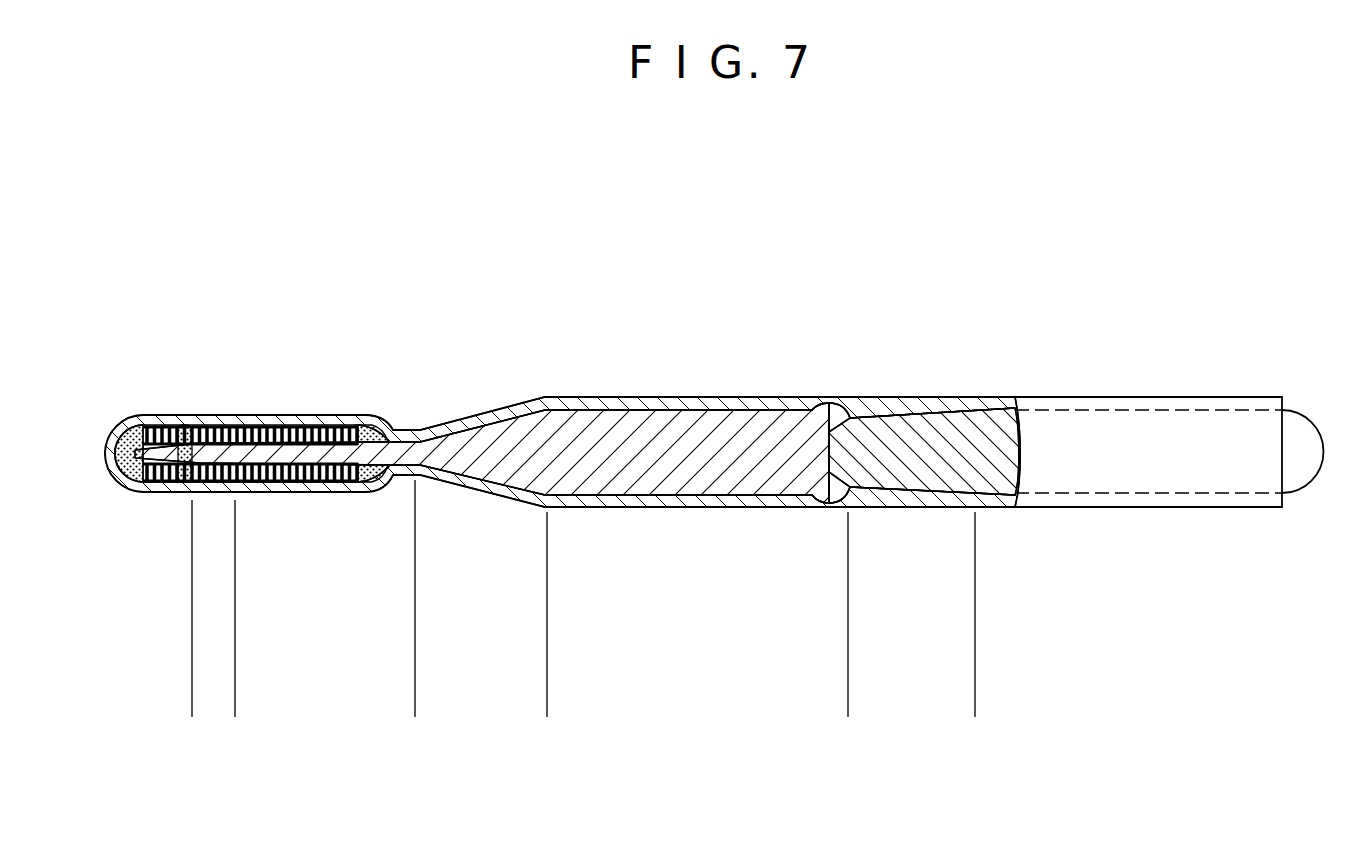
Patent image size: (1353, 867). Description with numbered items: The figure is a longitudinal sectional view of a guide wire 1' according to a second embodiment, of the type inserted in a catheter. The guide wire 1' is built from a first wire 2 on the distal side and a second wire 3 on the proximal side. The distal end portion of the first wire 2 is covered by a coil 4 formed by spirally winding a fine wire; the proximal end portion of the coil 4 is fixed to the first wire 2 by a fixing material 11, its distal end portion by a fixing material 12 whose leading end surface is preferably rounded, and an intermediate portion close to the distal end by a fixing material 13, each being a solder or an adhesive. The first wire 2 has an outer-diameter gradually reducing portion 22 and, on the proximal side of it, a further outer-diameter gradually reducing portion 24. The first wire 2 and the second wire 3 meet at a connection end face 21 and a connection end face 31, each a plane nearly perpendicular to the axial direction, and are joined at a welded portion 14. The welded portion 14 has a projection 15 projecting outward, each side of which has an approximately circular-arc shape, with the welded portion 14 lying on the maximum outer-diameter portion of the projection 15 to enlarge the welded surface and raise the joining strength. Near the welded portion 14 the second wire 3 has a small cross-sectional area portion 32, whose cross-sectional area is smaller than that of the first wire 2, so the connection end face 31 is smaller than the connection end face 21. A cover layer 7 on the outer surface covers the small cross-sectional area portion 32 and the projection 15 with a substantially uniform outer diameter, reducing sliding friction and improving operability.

The guide wire 1' is at (714, 317).
The first wire 2 is at (656, 445).
The second wire 3 is at (976, 445).
The coil 4 is at (297, 425).
The cover layer 7 is at (654, 507).
The fixing material 11 is at (363, 418).
The fixing material 12 is at (125, 418).
The fixing material 13 is at (184, 425).
The welded portion 14 is at (828, 505).
The projection 15 is at (830, 385).
The connection end face 21 is at (850, 418).
The outer-diameter gradually reducing portion 22 is at (235, 700).
The outer-diameter gradually reducing portion 24 is at (415, 698).
The connection end face 31 is at (818, 470).
The small cross-sectional area portion 32 is at (975, 698).